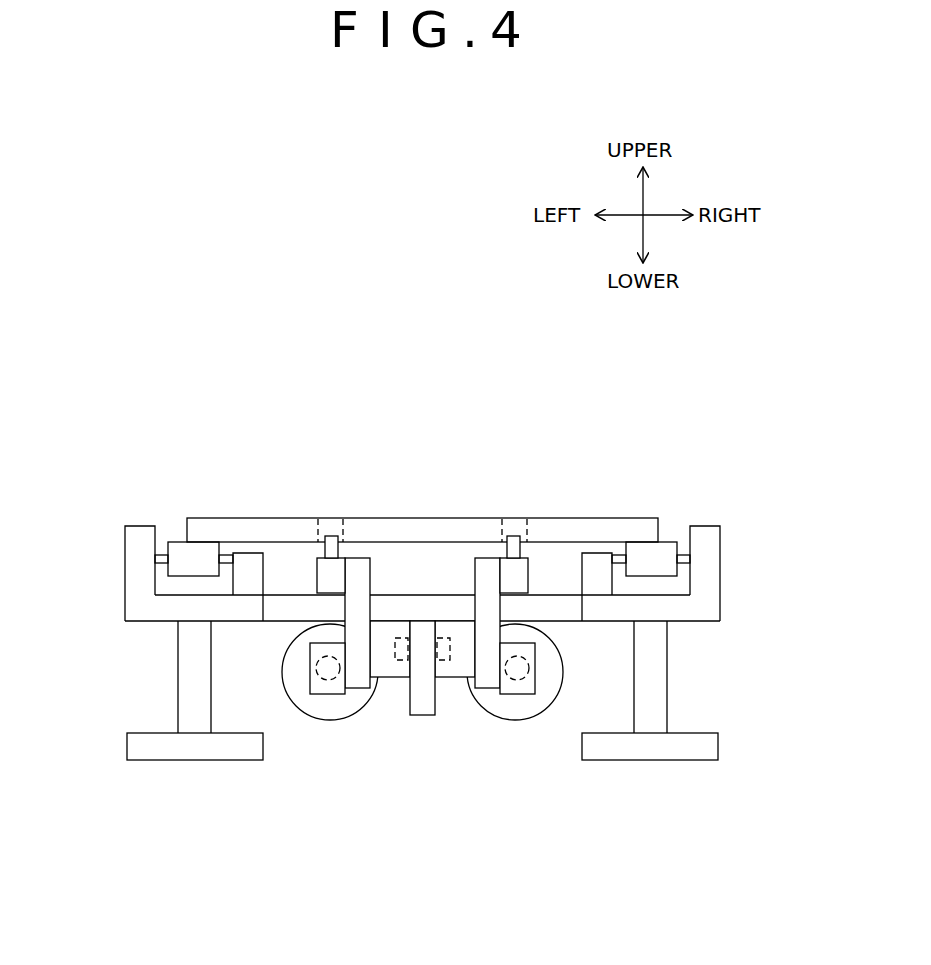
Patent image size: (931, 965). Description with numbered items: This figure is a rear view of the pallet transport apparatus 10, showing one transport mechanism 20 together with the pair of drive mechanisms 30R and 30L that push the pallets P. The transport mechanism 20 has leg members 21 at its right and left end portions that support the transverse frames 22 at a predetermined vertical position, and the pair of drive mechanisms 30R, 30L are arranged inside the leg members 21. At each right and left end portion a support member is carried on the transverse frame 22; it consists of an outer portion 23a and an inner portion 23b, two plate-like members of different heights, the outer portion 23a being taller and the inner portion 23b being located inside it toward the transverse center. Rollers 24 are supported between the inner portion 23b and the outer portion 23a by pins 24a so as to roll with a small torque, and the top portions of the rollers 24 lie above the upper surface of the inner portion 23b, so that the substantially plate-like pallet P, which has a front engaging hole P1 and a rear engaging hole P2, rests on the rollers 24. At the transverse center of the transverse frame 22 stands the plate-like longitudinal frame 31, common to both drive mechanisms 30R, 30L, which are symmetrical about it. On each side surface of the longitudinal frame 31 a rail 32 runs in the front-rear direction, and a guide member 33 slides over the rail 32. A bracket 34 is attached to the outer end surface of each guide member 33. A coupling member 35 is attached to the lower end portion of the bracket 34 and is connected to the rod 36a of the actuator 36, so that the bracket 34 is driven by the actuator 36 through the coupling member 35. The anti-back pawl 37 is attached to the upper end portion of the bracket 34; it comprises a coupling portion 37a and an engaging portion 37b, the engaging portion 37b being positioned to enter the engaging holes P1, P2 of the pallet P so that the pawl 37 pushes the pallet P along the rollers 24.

The apparatus 10 is at (138, 307).
The transport mechanism 20 is at (385, 387).
The leg member 21 is at (157, 753).
The transverse frame 22 is at (413, 600).
The outer portion 23a is at (142, 535).
The inner portion 23b is at (243, 583).
The roller 24 is at (178, 553).
The pin 24a is at (152, 557).
The left-side drive mechanism 30L is at (332, 803).
The right-side drive mechanism 30R is at (508, 802).
The longitudinal frame 31 is at (422, 708).
The rail 32 is at (394, 648).
The guide member 33 is at (390, 670).
The bracket 34 is at (358, 567).
The coupling member 35 is at (318, 697).
The actuator 36 is at (282, 683).
The rod 36a is at (329, 683).
The anti-back pawl 37 is at (315, 462).
The coupling portion 37a is at (327, 577).
The engaging portion 37b is at (328, 553).
The pallet P is at (445, 517).
The front engaging hole P1 is at (332, 518).
The rear engaging hole P2 is at (512, 517).